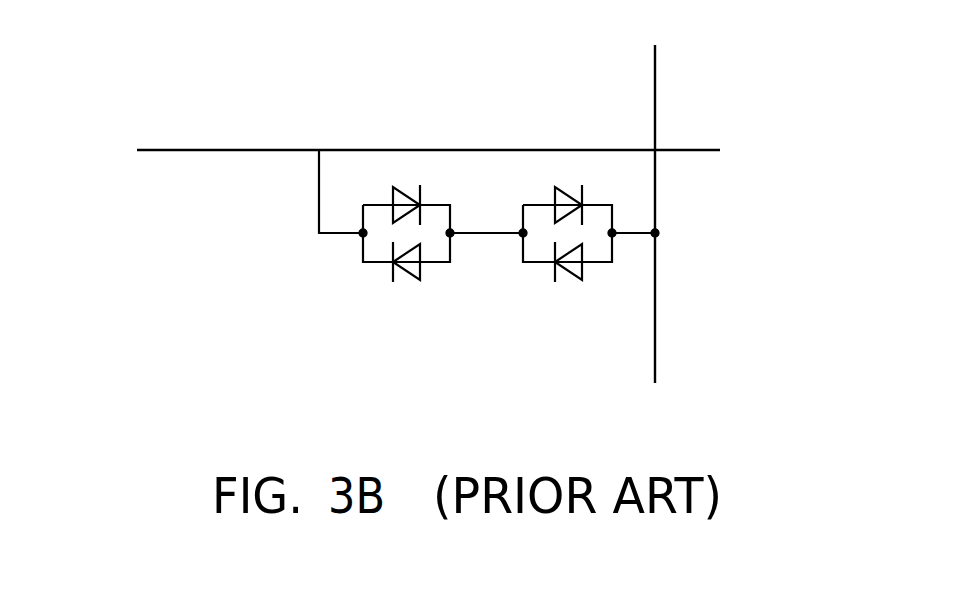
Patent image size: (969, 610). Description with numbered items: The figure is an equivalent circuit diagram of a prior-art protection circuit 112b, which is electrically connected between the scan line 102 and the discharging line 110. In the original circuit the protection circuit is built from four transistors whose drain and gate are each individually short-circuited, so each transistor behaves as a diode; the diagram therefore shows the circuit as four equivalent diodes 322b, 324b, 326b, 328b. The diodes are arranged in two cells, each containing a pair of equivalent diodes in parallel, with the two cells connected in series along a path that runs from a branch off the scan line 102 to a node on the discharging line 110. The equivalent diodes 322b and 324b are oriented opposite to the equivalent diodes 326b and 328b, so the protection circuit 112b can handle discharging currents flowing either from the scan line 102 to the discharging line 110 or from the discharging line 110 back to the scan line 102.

The protection circuit 112b is at (356, 175).
The scan line 102 is at (175, 152).
The discharging line 110 is at (657, 358).
The equivalent diode 322b is at (407, 190).
The equivalent diode 324b is at (568, 190).
The equivalent diode 326b is at (407, 282).
The equivalent diode 328b is at (568, 282).